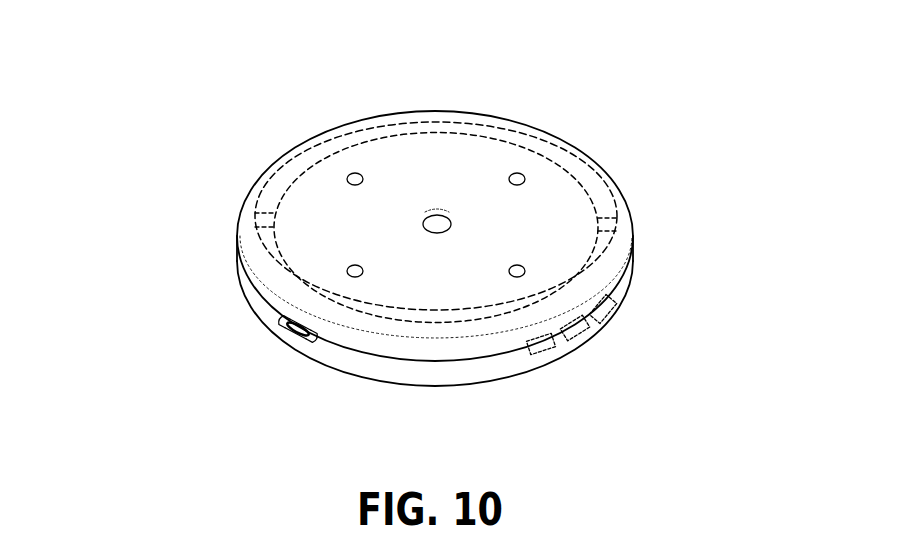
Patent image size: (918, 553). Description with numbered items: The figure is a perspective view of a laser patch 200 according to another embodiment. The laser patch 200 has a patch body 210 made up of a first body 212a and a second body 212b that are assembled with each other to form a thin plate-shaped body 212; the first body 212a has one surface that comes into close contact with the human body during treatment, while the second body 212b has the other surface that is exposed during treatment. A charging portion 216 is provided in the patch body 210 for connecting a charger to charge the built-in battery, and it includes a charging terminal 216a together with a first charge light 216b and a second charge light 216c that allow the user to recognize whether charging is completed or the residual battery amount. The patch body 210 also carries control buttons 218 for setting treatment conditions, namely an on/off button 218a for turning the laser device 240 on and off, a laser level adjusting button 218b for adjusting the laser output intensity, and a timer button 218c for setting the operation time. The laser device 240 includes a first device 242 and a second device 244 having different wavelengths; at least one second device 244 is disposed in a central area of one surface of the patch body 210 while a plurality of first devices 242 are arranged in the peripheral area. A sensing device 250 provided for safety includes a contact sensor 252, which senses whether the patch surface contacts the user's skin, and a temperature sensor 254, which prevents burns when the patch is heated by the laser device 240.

The laser patch 200 is at (102, 37).
The patch body 210 is at (526, 128).
The thin plate-shaped body 212 is at (518, 311).
The first body 212a is at (633, 254).
The second body 212b is at (630, 284).
The charging portion 216 is at (253, 375).
The charging terminal 216a is at (266, 370).
The first charge light 216b is at (282, 325).
The second charge light 216c is at (317, 341).
The control buttons 218 is at (663, 366).
The on/off button 218a is at (554, 349).
The laser level adjusting button 218b is at (588, 334).
The timer button 218c is at (613, 307).
The laser device 240 is at (607, 203).
The first device 242 is at (451, 221).
The second device 244 is at (440, 208).
The sensing device 250 is at (351, 222).
The contact sensor 252 is at (253, 213).
The temperature sensor 254 is at (150, 168).